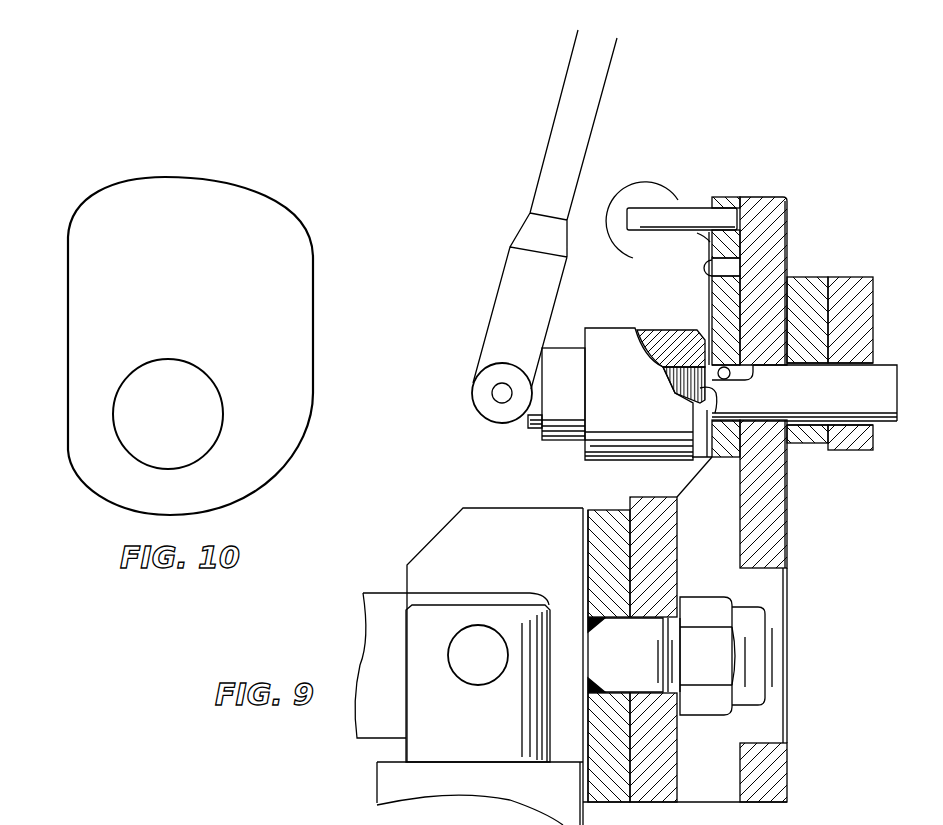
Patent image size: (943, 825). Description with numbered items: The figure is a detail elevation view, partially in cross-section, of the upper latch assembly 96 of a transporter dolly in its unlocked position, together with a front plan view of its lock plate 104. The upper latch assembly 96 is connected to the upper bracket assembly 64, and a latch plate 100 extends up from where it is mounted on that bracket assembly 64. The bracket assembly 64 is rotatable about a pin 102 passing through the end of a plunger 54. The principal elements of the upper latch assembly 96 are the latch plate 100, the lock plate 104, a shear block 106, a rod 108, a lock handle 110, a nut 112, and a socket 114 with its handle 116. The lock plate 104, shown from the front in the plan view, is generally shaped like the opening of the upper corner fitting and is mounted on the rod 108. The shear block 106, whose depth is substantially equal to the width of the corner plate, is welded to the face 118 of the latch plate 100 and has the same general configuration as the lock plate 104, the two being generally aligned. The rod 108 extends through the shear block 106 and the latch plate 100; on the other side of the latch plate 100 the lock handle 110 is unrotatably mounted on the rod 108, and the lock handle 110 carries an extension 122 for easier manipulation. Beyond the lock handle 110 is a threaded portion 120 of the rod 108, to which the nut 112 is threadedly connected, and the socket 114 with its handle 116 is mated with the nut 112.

In FIG. 9, the plunger 54 is at (387, 773).
In FIG. 9, the upper bracket assembly 64 is at (700, 806).
In FIG. 9, the upper latch assembly 96 is at (775, 454).
In FIG. 9, the latch plate 100 is at (783, 207).
In FIG. 9, the pin 102 is at (457, 647).
In FIG. 10, the lock plate 104 is at (306, 229).
In FIG. 9, the lock plate 104 is at (860, 282).
In FIG. 9, the shear block 106 is at (808, 280).
In FIG. 10, the rod 108 is at (135, 453).
In FIG. 9, the rod 108 is at (882, 420).
In FIG. 9, the lock handle 110 is at (708, 293).
In FIG. 9, the nut 112 is at (678, 347).
In FIG. 9, the socket 114 is at (617, 333).
In FIG. 9, the handle 116 is at (500, 278).
In FIG. 9, the face 118 is at (787, 228).
In FIG. 9, the threaded portion 120 is at (712, 395).
In FIG. 9, the extension 122 is at (648, 213).